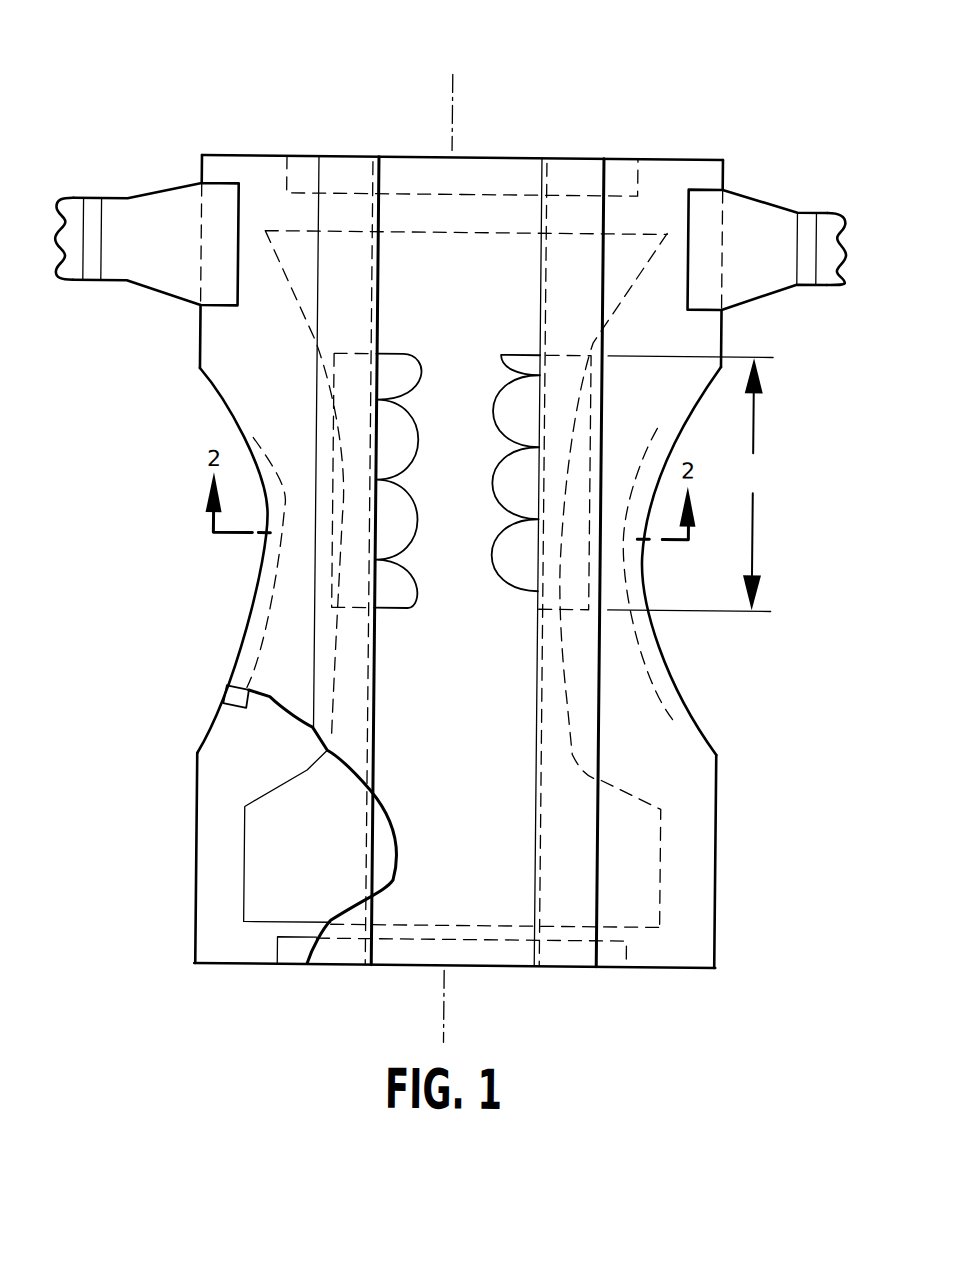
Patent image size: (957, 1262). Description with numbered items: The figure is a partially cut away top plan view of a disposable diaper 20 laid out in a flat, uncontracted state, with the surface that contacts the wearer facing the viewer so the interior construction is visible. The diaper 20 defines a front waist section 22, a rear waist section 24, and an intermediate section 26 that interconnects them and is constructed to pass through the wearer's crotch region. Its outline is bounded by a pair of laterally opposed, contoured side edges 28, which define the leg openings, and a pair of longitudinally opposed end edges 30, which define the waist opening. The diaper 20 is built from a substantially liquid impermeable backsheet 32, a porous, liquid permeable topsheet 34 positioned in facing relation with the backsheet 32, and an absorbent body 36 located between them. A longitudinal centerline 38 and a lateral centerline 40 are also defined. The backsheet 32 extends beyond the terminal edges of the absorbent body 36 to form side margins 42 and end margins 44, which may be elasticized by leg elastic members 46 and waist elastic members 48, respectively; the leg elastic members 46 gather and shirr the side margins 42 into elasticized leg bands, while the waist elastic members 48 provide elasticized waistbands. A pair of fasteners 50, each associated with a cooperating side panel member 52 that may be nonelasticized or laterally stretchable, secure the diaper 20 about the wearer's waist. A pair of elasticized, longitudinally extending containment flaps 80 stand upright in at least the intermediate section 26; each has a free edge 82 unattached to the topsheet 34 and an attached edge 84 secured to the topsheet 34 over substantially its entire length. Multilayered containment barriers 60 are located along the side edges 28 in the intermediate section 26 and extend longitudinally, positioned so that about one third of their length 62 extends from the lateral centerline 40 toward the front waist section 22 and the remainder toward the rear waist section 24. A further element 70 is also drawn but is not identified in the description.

The disposable diaper 20 is at (207, 48).
The front waist section 22 is at (822, 826).
The rear waist section 24 is at (805, 330).
The intermediate section 26 is at (822, 560).
The side edges 28 is at (705, 727).
The end edges 30 is at (617, 156).
The backsheet 32 is at (216, 792).
The topsheet 34 is at (276, 704).
The absorbent body 36 is at (249, 850).
The longitudinal centerline 38 is at (453, 118).
The lateral centerline 40 is at (241, 540).
The side margins 42 is at (245, 405).
The end margins 44 is at (268, 168).
The leg elastic members 46 is at (236, 708).
The waist elastic members 48 is at (283, 946).
The fasteners 50 is at (807, 212).
The side panel member 52 is at (755, 193).
The multilayered containment barriers 60 is at (405, 353).
The length 62 is at (689, 484).
The elastic member 70 is at (421, 443).
The containment flaps 80 is at (567, 171).
The free edge 82 is at (538, 950).
The attached edge 84 is at (605, 949).